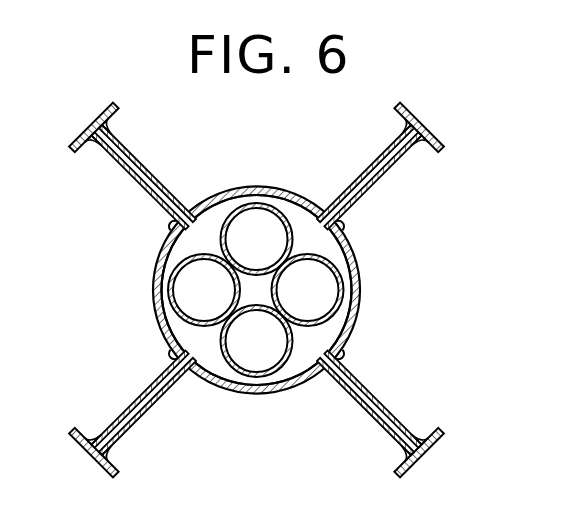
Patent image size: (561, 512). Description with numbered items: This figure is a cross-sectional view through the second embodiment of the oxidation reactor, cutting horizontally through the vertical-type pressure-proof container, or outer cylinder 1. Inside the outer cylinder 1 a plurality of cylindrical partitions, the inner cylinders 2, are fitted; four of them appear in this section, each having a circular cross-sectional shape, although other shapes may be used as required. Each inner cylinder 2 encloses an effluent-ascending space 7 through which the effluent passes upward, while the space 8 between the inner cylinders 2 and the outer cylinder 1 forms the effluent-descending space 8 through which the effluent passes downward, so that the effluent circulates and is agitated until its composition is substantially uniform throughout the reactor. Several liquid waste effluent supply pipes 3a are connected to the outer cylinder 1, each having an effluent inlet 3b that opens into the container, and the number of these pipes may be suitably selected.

The outer cylinder 1 is at (360, 277).
The inner cylinder 2 is at (156, 302).
The liquid waste effluent supply pipe 3a is at (127, 162).
The effluent inlet 3b is at (170, 240).
The effluent-ascending space 7 is at (265, 218).
The effluent-descending space 8 is at (214, 216).